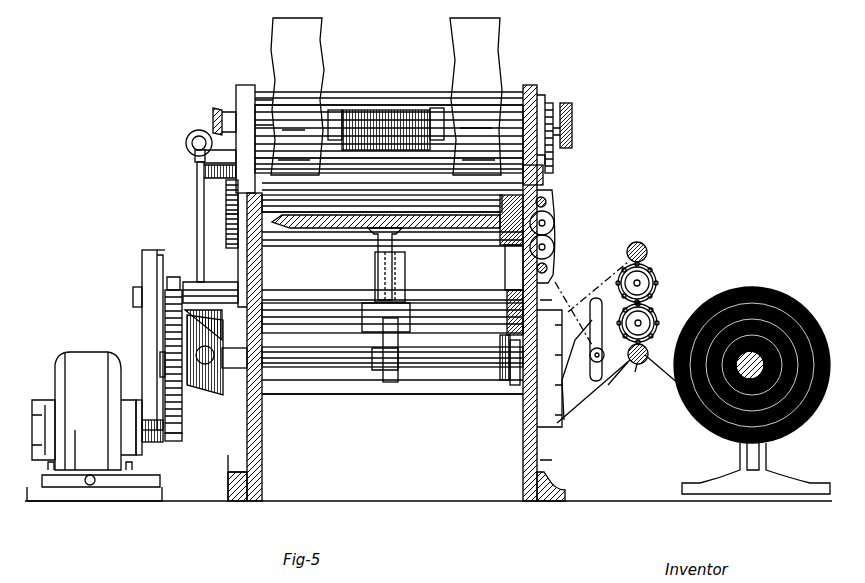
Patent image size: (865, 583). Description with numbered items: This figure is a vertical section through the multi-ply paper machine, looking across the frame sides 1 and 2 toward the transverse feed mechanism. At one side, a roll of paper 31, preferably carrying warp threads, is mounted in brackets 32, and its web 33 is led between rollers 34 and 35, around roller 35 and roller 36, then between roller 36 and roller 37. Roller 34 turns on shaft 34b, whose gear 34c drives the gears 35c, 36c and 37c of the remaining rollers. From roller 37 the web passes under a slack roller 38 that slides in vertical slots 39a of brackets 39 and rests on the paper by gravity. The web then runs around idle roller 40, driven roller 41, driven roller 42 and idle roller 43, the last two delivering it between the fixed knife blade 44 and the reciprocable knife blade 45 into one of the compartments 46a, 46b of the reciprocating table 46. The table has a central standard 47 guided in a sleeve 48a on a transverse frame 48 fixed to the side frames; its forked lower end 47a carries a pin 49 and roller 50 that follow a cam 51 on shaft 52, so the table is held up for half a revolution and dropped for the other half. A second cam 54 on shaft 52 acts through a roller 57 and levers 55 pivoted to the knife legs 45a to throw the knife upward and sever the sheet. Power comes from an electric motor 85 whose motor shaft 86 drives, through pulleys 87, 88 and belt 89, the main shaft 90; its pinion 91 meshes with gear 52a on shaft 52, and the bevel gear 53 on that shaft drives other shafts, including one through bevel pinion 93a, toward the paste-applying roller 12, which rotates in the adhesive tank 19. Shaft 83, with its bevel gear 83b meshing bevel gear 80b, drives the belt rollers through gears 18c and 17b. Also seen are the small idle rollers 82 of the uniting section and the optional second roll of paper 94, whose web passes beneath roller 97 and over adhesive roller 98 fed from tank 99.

The frame side 1 is at (262, 430).
The frame side 2 is at (523, 418).
The paste-applying roller 12 is at (300, 333).
The gear on roller 17 shaft 17b is at (226, 190).
The gear on roller 18 shaft 18c is at (226, 223).
The pan or tank 19 is at (310, 390).
The roll of paper 31 is at (775, 290).
The brackets 32 is at (775, 455).
The paper web 33 is at (650, 356).
The roller 34 is at (642, 364).
The roller shaft 34b is at (634, 372).
The gear 34c is at (616, 385).
The roller 35 is at (656, 312).
The gear 35c is at (657, 320).
The roller 36 is at (655, 270).
The gear 36c is at (657, 280).
The roller 37 is at (640, 243).
The gear 37c is at (628, 242).
The slack roller 38 is at (566, 403).
The brackets 39 is at (570, 410).
The vertical slots 39a is at (592, 310).
The idle roller 40 is at (548, 268).
The roller 41 is at (553, 243).
The roller 42 is at (553, 218).
The idle roller 43 is at (548, 200).
The fixed knife blade 44 is at (545, 162).
The reciprocable knife blade 45 is at (498, 222).
The depending legs 45a is at (508, 262).
The reciprocating table 46 is at (328, 232).
The compartment 46a is at (378, 196).
The compartment 46b is at (425, 210).
The reciprocating standard 47 is at (376, 240).
The forked lower end 47a is at (398, 318).
The transverse frame 48 is at (350, 303).
The sleeve 48a is at (405, 266).
The pin 49 is at (375, 320).
The roller 50 is at (383, 336).
The cam 51 is at (388, 372).
The shaft 52 is at (425, 360).
The gear 52a is at (176, 434).
The bevel gear 53 is at (200, 395).
The cam 54 is at (510, 377).
The lever 55 is at (500, 342).
The roller 57 is at (508, 305).
The bevel gear 80b is at (212, 115).
The small idle rollers 82 is at (386, 122).
The shaft 83 is at (197, 236).
The bevel gear 83b is at (186, 143).
The electric motor 85 is at (94, 426).
The motor shaft 86 is at (140, 400).
The pulley 87 is at (155, 442).
The pulley 88 is at (142, 262).
The belt 89 is at (148, 345).
The main shaft 90 is at (133, 298).
The pinion 91 is at (172, 277).
The bevel pinion 93a is at (212, 375).
The roll of paper 94 is at (458, 55).
The roller 97 is at (530, 106).
The adhesive-applying roller 98 is at (445, 112).
The tank 99 is at (258, 125).